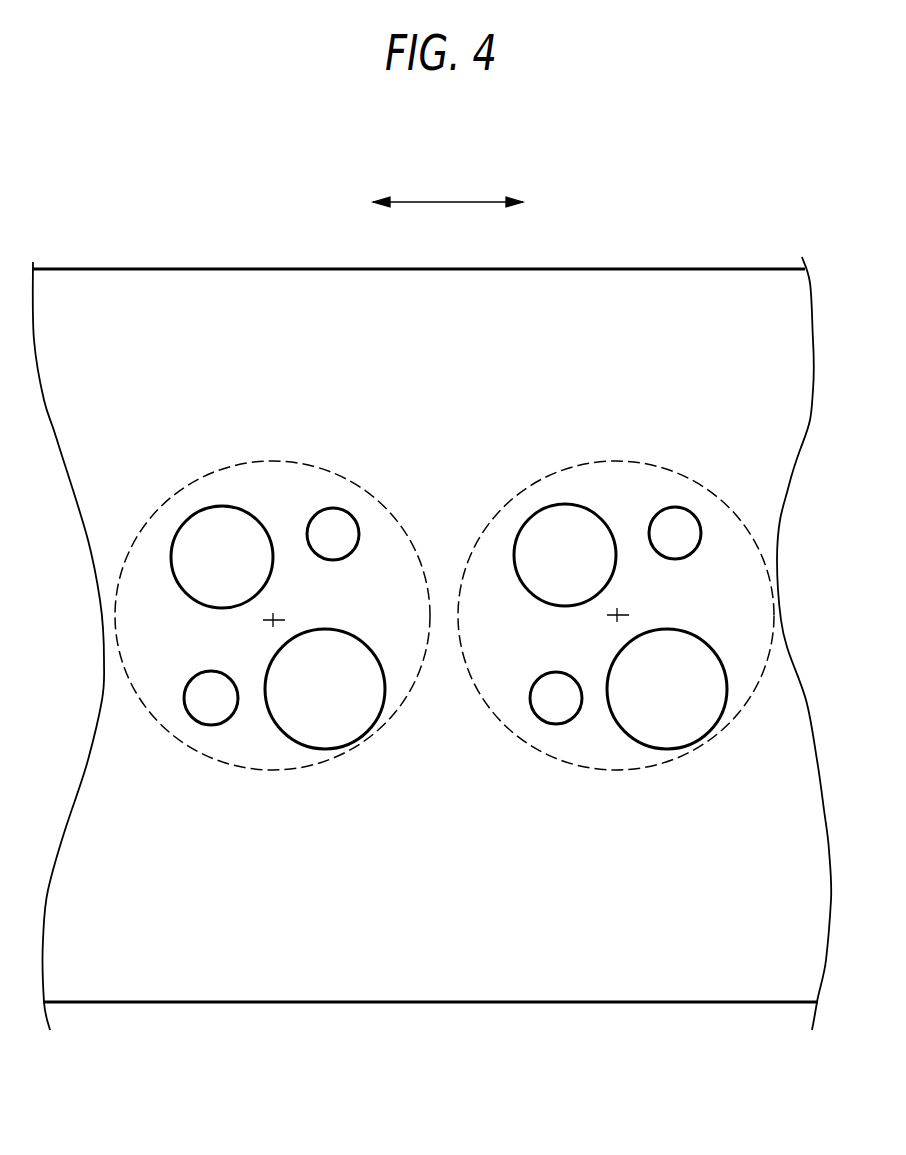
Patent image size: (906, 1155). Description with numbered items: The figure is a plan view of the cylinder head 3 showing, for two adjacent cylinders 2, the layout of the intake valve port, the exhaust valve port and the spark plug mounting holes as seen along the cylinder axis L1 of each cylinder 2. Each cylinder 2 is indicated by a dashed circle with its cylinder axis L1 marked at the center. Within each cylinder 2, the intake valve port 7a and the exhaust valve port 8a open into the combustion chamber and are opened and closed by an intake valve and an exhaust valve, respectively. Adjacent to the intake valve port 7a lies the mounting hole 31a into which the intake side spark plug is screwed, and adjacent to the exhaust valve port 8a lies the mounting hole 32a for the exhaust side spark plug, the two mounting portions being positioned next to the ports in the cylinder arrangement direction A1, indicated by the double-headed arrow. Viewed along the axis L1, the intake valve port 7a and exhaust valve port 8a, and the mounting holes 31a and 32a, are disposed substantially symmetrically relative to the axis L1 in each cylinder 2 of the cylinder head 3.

The cylinder 2 is at (503, 498).
The cylinder head 3 is at (716, 975).
The intake valve port 7a is at (303, 748).
The exhaust valve port 8a is at (219, 507).
The mounting hole 31a is at (190, 722).
The mounting hole 32a is at (318, 509).
The cylinder axis L1 is at (274, 618).
The cylinder arrangement direction A1 is at (448, 202).